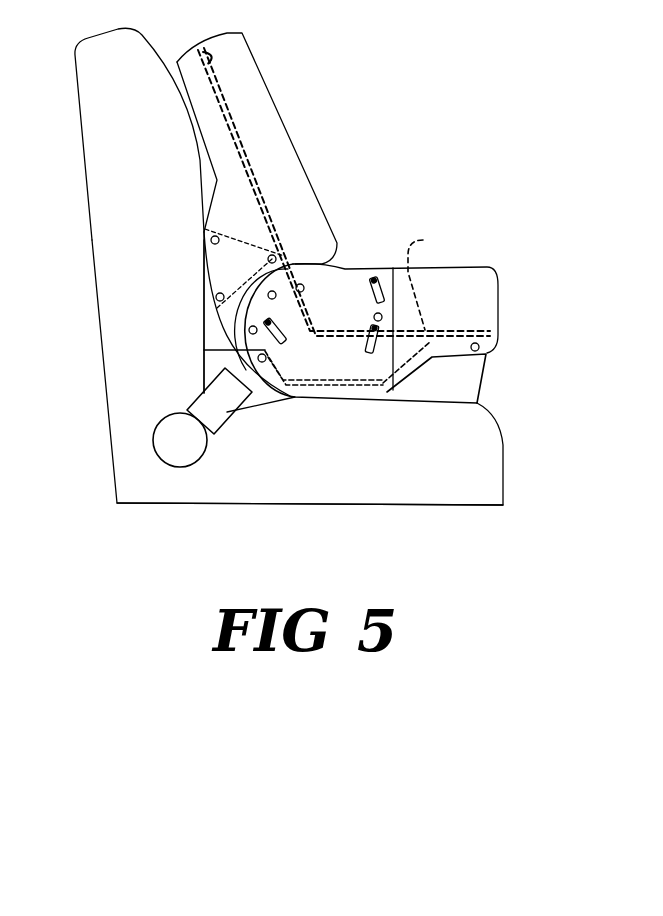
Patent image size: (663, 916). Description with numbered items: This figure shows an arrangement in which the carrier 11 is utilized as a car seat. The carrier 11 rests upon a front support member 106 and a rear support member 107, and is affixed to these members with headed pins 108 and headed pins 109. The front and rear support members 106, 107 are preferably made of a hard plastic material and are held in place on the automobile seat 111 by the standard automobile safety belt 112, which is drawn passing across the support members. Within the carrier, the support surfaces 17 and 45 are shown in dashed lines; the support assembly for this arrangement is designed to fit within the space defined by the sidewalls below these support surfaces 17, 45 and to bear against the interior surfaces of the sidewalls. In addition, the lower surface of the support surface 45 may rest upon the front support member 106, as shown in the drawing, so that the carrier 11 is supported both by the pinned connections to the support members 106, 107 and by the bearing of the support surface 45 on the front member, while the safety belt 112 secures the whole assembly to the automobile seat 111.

The carrier 11 is at (332, 126).
The support surface 17 is at (227, 108).
The support surface 45 is at (433, 278).
The front support member 106 is at (427, 390).
The rear support member 107 is at (205, 367).
The headed pins 108 is at (475, 352).
The headed pins 109 is at (204, 357).
The automobile seat 111 is at (445, 462).
The automobile safety belt 112 is at (212, 420).